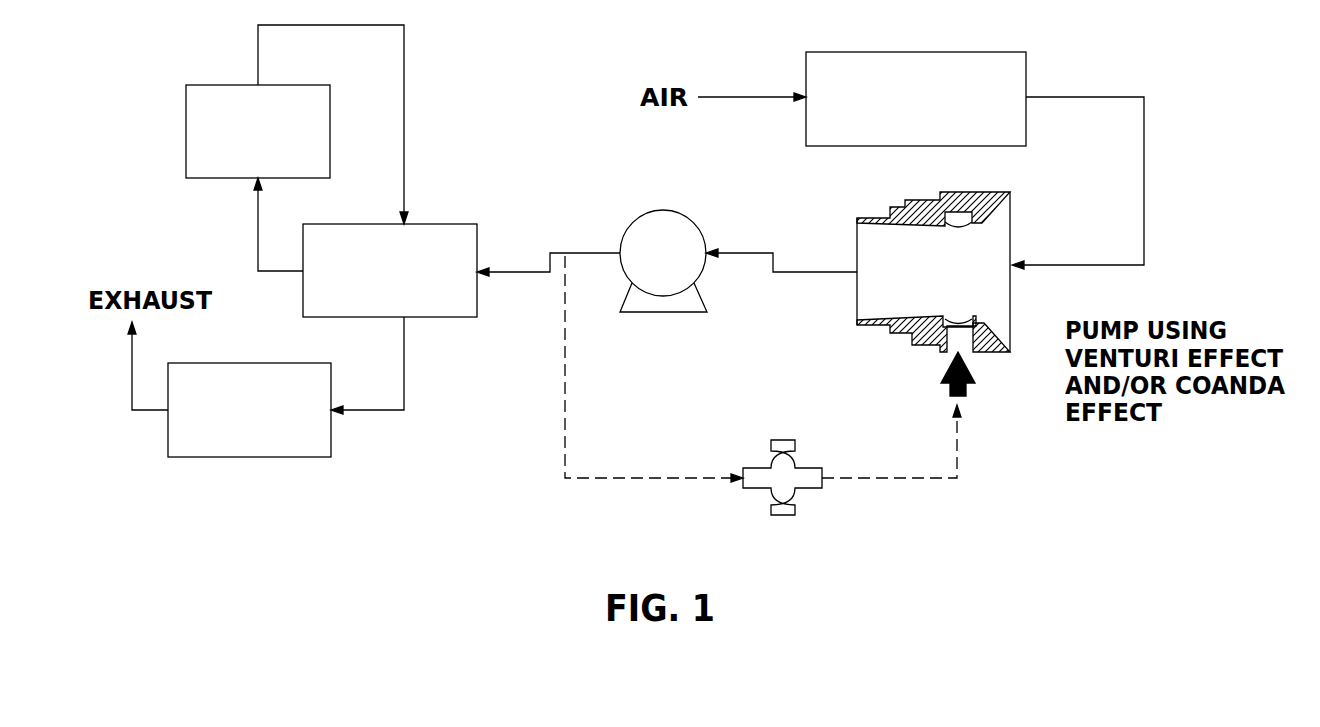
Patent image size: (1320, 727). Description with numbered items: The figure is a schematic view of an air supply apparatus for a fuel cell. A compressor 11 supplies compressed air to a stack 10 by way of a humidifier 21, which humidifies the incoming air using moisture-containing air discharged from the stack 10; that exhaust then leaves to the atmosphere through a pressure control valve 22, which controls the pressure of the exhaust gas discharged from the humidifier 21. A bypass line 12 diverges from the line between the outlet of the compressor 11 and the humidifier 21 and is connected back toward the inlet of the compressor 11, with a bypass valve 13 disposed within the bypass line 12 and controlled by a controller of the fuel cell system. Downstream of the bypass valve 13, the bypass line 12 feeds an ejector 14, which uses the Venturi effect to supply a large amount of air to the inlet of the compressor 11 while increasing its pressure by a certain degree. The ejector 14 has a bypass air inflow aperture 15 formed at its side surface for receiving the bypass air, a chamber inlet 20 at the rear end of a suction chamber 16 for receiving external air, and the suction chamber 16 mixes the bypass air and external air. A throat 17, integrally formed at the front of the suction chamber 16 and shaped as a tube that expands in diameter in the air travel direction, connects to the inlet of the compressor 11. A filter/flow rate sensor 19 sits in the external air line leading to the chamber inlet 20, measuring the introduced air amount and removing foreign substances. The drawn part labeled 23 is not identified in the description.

The stack 10 is at (225, 180).
The compressor 11 is at (655, 210).
The bypass line 12 is at (608, 480).
The bypass valve 13 is at (763, 487).
The ejector 14 is at (980, 288).
The bypass air inflow aperture 15 is at (975, 362).
The suction chamber 16 is at (921, 280).
The throat 17 is at (893, 320).
The filter/flow rate sensor 19 is at (1025, 73).
The chamber inlet 20 is at (1010, 203).
The humidifier 21 is at (442, 223).
The pressure control valve 22 is at (331, 442).
The diffuser outlet 23 is at (983, 322).